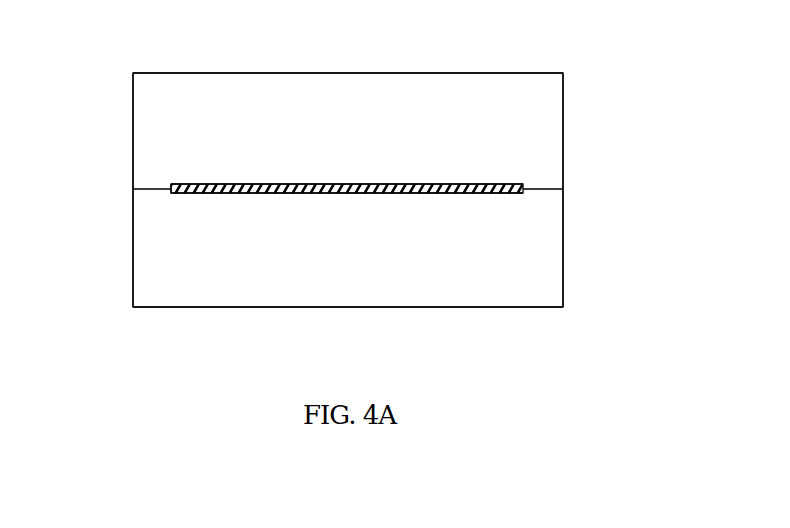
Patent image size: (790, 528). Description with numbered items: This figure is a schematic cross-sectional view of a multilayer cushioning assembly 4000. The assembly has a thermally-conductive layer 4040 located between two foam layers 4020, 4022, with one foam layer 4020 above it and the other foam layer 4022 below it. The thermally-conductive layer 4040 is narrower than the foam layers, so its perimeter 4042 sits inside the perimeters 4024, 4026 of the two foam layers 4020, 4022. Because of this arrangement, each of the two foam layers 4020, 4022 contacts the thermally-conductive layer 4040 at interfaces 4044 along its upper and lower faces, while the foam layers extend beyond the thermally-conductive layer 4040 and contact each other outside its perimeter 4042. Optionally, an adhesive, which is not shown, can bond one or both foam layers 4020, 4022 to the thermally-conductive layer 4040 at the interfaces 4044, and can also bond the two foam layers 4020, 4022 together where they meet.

The multilayer cushioning assembly 4000 is at (390, 52).
The foam layer 4020 is at (165, 117).
The foam layer 4022 is at (158, 295).
The perimeter of foam layer 4024 is at (133, 128).
The perimeter of foam layer 4026 is at (133, 249).
The thermally-conductive layer 4040 is at (505, 184).
The perimeter of thermally-conductive layer 4042 is at (171, 193).
The interface 4044 is at (243, 183).